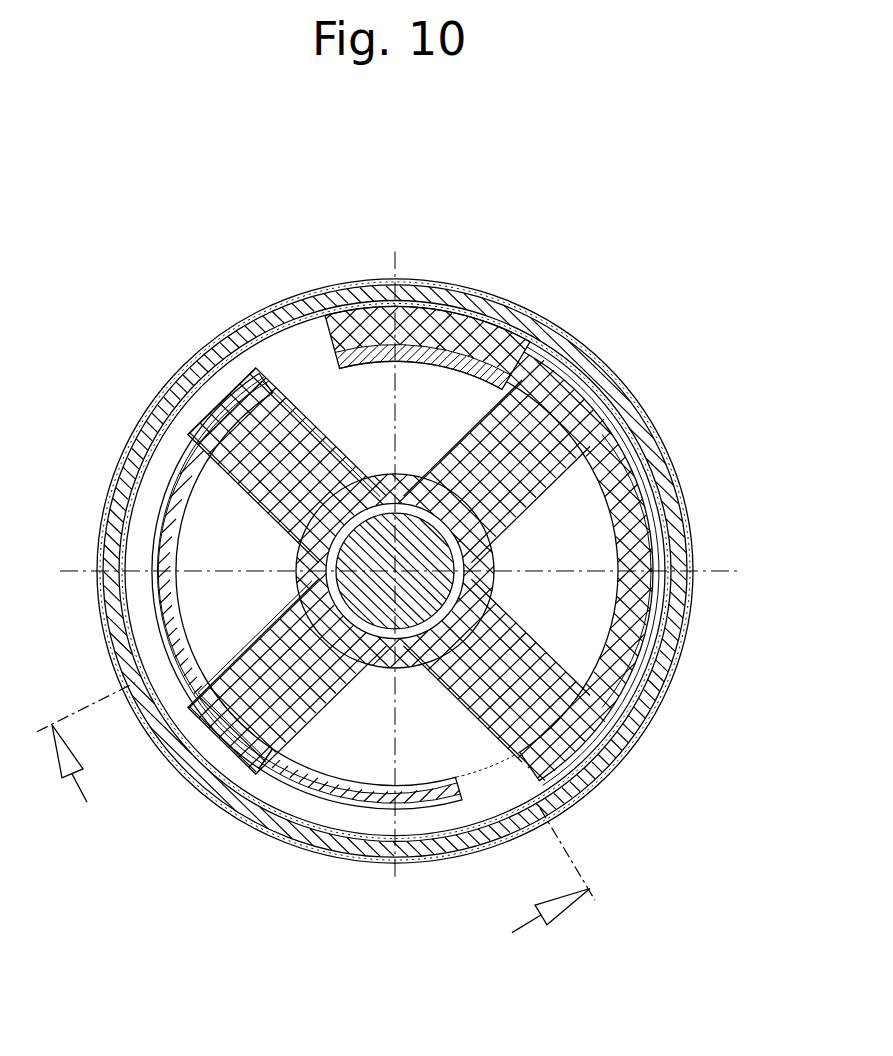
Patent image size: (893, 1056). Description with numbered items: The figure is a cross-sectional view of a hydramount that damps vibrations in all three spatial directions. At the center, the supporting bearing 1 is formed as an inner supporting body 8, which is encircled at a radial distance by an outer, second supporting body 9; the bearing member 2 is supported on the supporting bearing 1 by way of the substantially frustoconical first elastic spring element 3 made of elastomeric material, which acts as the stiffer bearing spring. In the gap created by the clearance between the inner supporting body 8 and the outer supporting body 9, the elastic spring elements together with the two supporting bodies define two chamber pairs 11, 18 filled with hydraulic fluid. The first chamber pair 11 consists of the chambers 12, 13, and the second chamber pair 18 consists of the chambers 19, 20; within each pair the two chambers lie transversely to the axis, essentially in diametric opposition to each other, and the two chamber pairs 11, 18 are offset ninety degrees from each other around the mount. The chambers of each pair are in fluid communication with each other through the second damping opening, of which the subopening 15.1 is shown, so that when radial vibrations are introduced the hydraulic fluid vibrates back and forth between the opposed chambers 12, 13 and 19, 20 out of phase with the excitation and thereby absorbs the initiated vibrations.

The supporting bearing 1 is at (598, 448).
The bearing member 2 is at (682, 635).
The first elastic spring element 3 is at (275, 462).
The inner supporting body 8 is at (443, 560).
The outer supporting body 9 is at (427, 593).
The chamber pair 11 is at (353, 697).
The chamber 12 is at (413, 373).
The chamber 13 is at (420, 755).
The subopening 15.1 is at (137, 537).
The chamber pair 18 is at (555, 635).
The chamber 19 is at (213, 537).
The chamber 20 is at (570, 546).